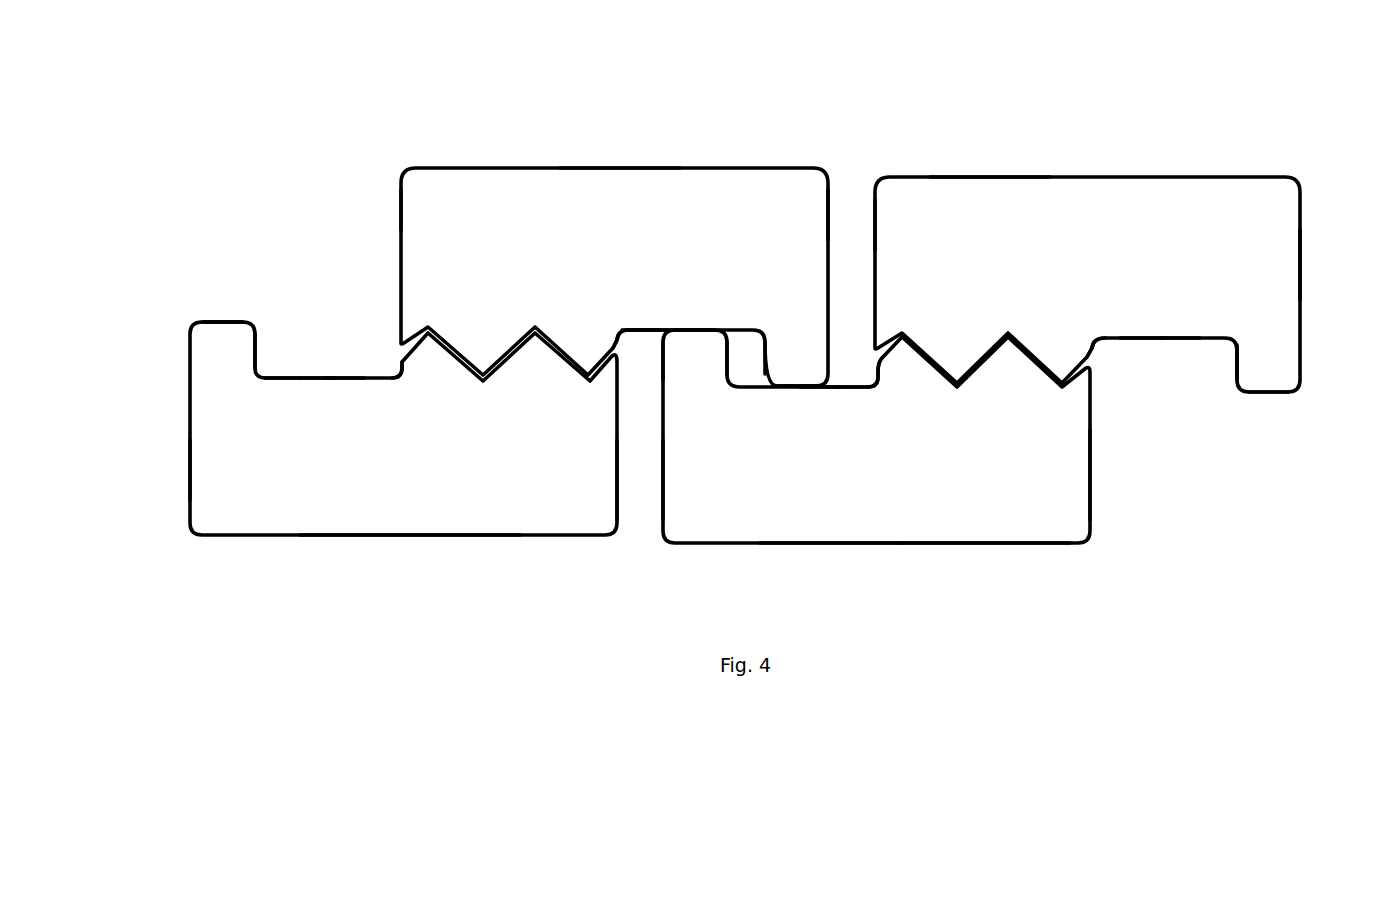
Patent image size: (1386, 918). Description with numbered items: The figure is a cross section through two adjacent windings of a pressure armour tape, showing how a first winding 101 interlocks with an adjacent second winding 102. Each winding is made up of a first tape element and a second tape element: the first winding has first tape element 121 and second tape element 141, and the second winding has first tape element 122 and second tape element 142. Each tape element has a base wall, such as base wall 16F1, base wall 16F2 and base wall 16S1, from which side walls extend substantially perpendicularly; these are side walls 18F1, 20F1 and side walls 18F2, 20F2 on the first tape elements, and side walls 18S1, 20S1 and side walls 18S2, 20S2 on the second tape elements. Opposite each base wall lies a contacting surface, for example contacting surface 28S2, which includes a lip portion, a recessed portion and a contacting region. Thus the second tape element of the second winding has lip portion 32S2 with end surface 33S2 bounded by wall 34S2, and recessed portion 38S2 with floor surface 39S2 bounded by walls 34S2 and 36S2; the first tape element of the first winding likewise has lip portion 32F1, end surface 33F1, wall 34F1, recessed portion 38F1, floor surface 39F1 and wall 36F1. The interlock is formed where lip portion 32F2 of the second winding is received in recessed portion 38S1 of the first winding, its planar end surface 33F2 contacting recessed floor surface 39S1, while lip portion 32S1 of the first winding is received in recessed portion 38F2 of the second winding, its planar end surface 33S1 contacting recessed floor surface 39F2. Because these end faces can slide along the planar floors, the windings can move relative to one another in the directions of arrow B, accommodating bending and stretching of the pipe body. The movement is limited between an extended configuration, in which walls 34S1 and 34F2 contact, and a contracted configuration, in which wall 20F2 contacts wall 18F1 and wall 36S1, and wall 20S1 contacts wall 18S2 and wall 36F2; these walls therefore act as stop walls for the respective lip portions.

The second winding 102 is at (478, 508).
The first winding 101 is at (1048, 530).
The first tape element 122 is at (716, 185).
The first tape element 121 is at (1158, 190).
The second tape element 142 is at (327, 513).
The second tape element 141 is at (960, 525).
The base wall 16F2 is at (620, 165).
The base wall 16F1 is at (985, 175).
The base wall 16S1 is at (878, 545).
The side wall 18F2 is at (400, 208).
The side wall 18F1 is at (872, 222).
The side wall 18S2 is at (622, 505).
The side wall 18S1 is at (1093, 470).
The side wall 20F2 is at (832, 208).
The side wall 20F1 is at (1300, 272).
The side wall 20S2 is at (190, 465).
The side wall 20S1 is at (652, 510).
The contacting surface 28S2 is at (317, 376).
The lip portion 32F2 is at (775, 350).
The lip portion 32F1 is at (1260, 378).
The lip portion 32S2 is at (222, 343).
The lip portion 32S1 is at (700, 362).
The end surface 33F2 is at (800, 383).
The end surface 33F1 is at (1282, 408).
The end surface 33S2 is at (218, 317).
The end surface 33S1 is at (688, 336).
The wall 34F2 is at (757, 358).
The wall 34F1 is at (1232, 360).
The wall 34S2 is at (254, 332).
The wall 34S1 is at (741, 354).
The wall 36F2 is at (620, 342).
The wall 36F1 is at (1093, 353).
The wall 36S2 is at (398, 362).
The wall 36S1 is at (873, 378).
The recessed portion 38F2 is at (643, 329).
The recessed portion 38F1 is at (1173, 340).
The recessed portion 38S2 is at (285, 376).
The recessed portion 38S1 is at (850, 390).
The recessed floor surface 39F2 is at (632, 334).
The recessed floor surface 39F1 is at (1147, 340).
The recessed floor surface 39S2 is at (340, 376).
The recessed floor surface 39S1 is at (822, 389).
The arrow B is at (1385, 318).